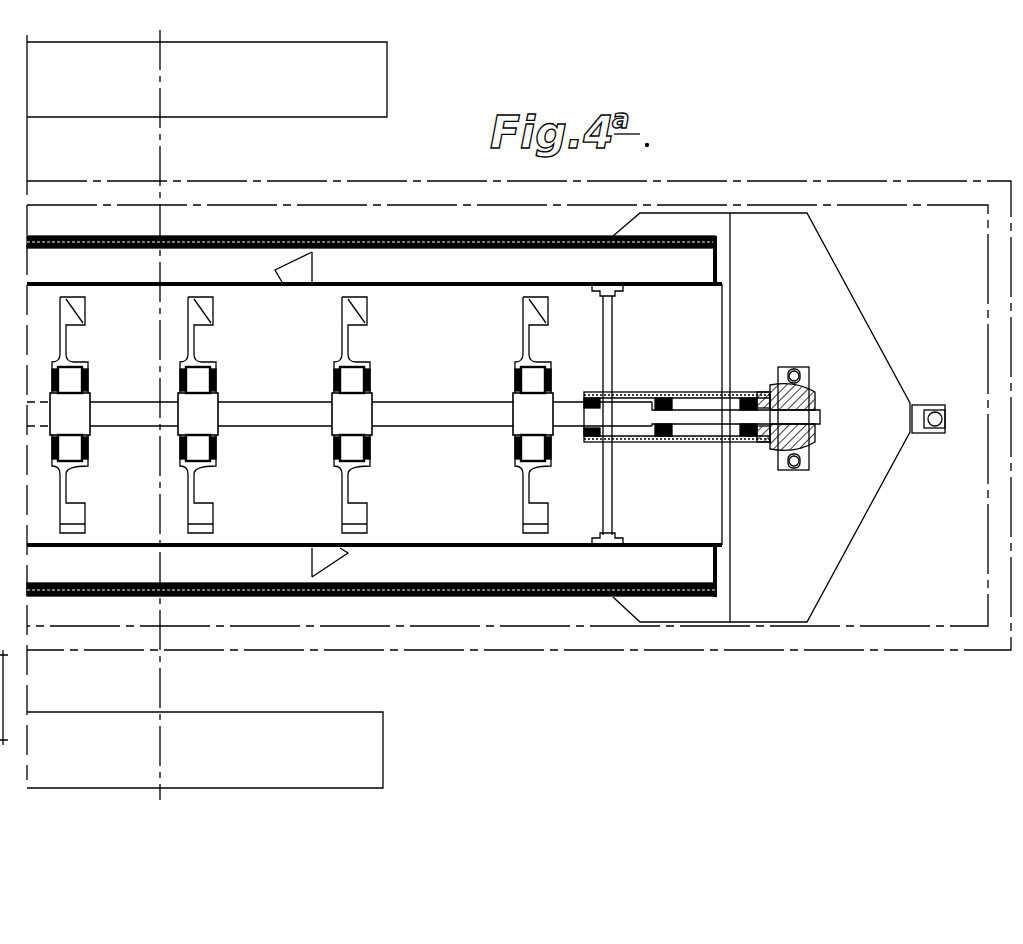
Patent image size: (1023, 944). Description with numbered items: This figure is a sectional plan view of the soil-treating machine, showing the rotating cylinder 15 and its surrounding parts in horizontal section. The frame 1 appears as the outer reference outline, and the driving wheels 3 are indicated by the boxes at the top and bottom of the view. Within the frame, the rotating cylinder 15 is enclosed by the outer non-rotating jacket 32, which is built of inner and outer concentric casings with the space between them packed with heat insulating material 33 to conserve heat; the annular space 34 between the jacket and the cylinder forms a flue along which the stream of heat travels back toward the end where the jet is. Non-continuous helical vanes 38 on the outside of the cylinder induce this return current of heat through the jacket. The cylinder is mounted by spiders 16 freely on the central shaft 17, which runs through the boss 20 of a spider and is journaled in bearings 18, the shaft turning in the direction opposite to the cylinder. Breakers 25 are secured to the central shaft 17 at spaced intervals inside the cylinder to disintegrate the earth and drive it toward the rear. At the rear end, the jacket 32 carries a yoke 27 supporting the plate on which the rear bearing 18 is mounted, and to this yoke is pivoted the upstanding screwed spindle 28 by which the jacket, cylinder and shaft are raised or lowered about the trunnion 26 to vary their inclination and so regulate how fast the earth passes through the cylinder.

The frame 1 is at (530, 644).
The driving wheels 3 is at (372, 745).
The rotating cylinder 15 is at (292, 546).
The spiders 16 is at (614, 528).
The central shaft 17 is at (292, 412).
The bearings 18 is at (812, 406).
The boss 20 is at (690, 442).
The breakers 25 is at (72, 343).
The trunnion 26 is at (532, 345).
The yoke 27 is at (683, 662).
The screwed spindle 28 is at (935, 411).
The outer non-rotating jacket 32 is at (430, 238).
The heat insulating material 33 is at (462, 575).
The annular space 34 is at (374, 416).
The helical vanes 38 is at (275, 270).